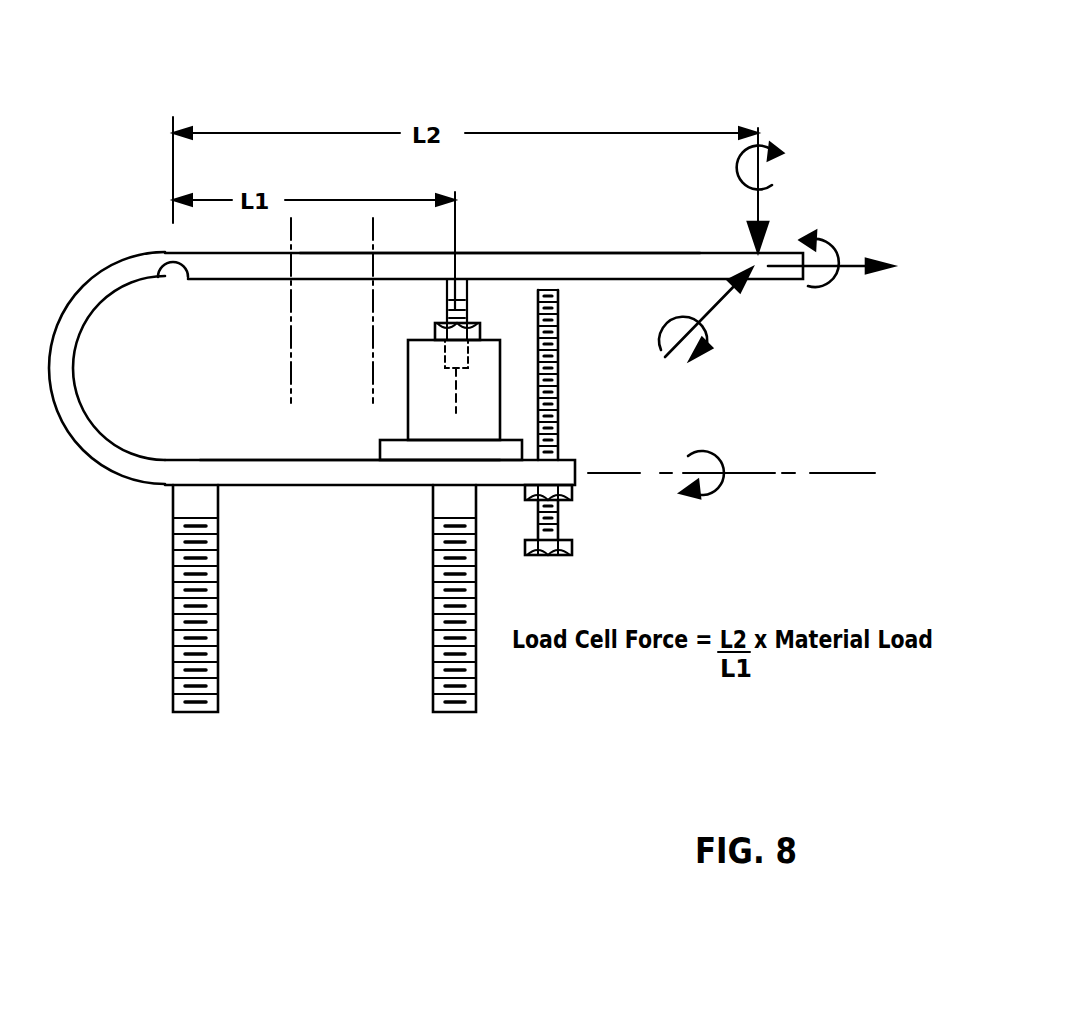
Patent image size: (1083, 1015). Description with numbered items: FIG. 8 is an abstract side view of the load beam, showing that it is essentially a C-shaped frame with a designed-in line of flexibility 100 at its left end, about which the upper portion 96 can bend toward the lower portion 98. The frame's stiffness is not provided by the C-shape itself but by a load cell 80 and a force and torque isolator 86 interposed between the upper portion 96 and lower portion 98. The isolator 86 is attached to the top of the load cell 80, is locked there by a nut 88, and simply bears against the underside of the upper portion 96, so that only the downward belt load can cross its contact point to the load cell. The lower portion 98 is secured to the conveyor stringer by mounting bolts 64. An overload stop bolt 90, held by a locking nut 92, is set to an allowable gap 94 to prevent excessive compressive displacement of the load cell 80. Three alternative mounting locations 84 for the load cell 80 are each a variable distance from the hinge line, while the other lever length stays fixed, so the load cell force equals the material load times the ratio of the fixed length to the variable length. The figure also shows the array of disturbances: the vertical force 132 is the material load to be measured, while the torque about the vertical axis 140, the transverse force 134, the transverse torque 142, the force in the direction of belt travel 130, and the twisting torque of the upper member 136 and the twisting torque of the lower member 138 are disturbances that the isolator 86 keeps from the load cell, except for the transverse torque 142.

The mounting bolts 64 is at (430, 663).
The load cell 80 is at (430, 407).
The load cell mounting locations 84 is at (450, 263).
The force and torque isolator 86 is at (482, 332).
The nut 88 is at (468, 292).
The overload stop bolt 90 is at (562, 523).
The locking nut 92 is at (522, 490).
The allowable gap 94 is at (560, 289).
The upper portion 96 is at (488, 265).
The lower portion 98 is at (255, 471).
The line of flexibility 100 is at (163, 253).
The force Fx 130 is at (888, 223).
The force Fy 132 is at (788, 83).
The force Fz 134 is at (662, 390).
The torque Tx1 136 is at (806, 203).
The torque Tx2 138 is at (668, 512).
The torque Ty 140 is at (820, 145).
The torque Tz 142 is at (752, 372).